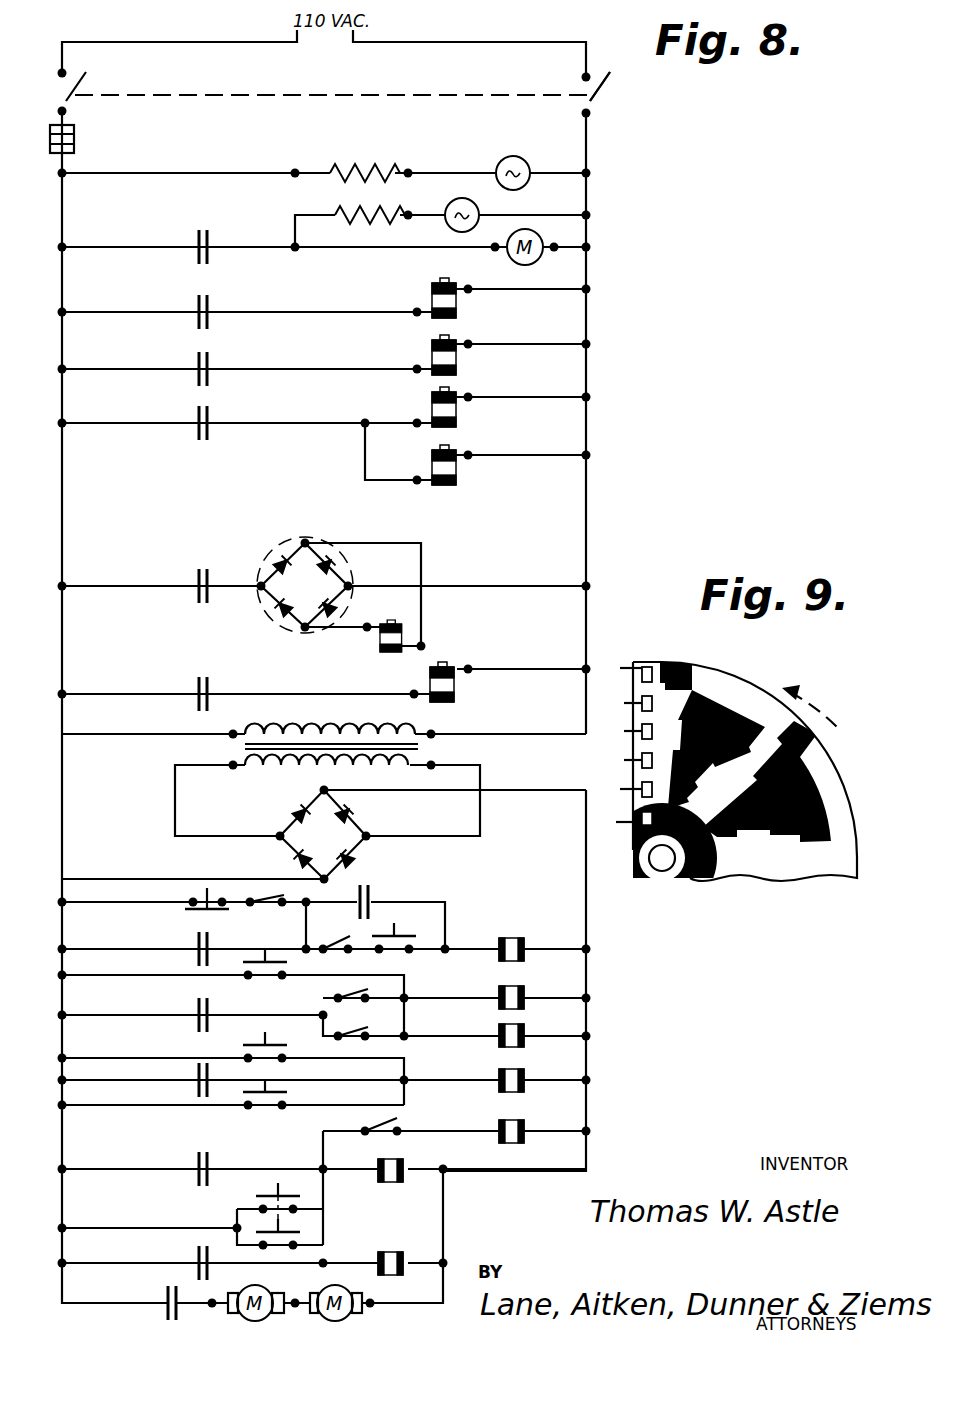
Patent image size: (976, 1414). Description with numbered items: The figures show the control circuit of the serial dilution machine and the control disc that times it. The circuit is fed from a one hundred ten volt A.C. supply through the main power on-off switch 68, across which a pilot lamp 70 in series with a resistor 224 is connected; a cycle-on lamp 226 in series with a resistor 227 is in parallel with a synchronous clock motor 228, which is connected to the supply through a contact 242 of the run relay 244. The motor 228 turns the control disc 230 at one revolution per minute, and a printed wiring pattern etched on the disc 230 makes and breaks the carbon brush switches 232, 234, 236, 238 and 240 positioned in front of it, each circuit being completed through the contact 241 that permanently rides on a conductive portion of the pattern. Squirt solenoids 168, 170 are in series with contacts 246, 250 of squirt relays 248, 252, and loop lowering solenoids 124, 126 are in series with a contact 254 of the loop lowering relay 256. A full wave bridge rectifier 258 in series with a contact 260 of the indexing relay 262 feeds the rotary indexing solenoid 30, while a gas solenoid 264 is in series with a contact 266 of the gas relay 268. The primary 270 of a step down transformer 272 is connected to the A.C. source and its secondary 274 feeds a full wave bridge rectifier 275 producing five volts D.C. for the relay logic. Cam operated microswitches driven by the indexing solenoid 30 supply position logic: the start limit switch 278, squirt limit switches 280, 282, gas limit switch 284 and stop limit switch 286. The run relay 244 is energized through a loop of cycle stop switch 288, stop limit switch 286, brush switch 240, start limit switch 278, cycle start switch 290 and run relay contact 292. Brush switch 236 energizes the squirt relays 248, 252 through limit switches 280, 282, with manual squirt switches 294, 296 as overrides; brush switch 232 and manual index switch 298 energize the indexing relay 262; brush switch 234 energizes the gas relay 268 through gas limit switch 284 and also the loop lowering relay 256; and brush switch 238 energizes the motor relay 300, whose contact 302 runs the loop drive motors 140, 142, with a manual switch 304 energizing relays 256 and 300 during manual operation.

In FIG. 8, the main power on-off switch 68 is at (600, 97).
In FIG. 8, the resistor 224 is at (362, 168).
In FIG. 8, the resistor 227 is at (333, 213).
In FIG. 8, the cycle-on lamp 226 is at (462, 198).
In FIG. 8, the pilot lamp 70 is at (513, 156).
In FIG. 8, the synchronous clock motor 228 is at (545, 240).
In FIG. 8, the contact of run relay 242 is at (192, 245).
In FIG. 8, the contact of squirt relay 248 246 is at (192, 310).
In FIG. 8, the contact of squirt relay 252 250 is at (192, 367).
In FIG. 8, the contact of loop lowering relay 254 is at (192, 421).
In FIG. 8, the squirt solenoid 168 is at (456, 300).
In FIG. 8, the squirt solenoid 170 is at (456, 357).
In FIG. 8, the loop lowering solenoid 124 is at (456, 409).
In FIG. 8, the loop lowering solenoid 126 is at (456, 467).
In FIG. 8, the full wave bridge rectifier 258 is at (282, 560).
In FIG. 8, the contact of indexing relay 260 is at (192, 584).
In FIG. 8, the rotary indexing solenoid 30 is at (378, 644).
In FIG. 8, the contact of gas relay 266 is at (192, 692).
In FIG. 8, the gas solenoid 264 is at (457, 684).
In FIG. 8, the primary 270 is at (302, 722).
In FIG. 8, the step down A.C. transformer 272 is at (242, 746).
In FIG. 8, the secondary 274 is at (305, 770).
In FIG. 8, the full wave bridge rectifier 275 is at (288, 822).
In FIG. 8, the cycle stop switch 288 is at (207, 888).
In FIG. 8, the stop limit switch 286 is at (268, 878).
In FIG. 8, the run relay contact 292 is at (372, 888).
In FIG. 8, the start limit switch 278 is at (332, 940).
In FIG. 8, the cycle start switch 290 is at (412, 934).
In FIG. 8, the run relay 244 is at (510, 940).
In FIG. 8, the manual squirt switch 294 is at (268, 958).
In FIG. 8, the brush switch 240 is at (192, 947).
In FIG. 9, the brush switch 240 is at (636, 786).
In FIG. 8, the squirt relay 248 is at (515, 988).
In FIG. 8, the squirt limit switch 280 is at (340, 990).
In FIG. 8, the squirt relay 252 is at (515, 1028).
In FIG. 8, the squirt limit switch 282 is at (368, 1022).
In FIG. 8, the brush switch 236 is at (192, 1013).
In FIG. 9, the brush switch 236 is at (636, 758).
In FIG. 8, the manual squirt switch 296 is at (255, 1044).
In FIG. 8, the indexing relay 262 is at (515, 1072).
In FIG. 8, the brush switch 232 is at (208, 1088).
In FIG. 9, the brush switch 232 is at (650, 662).
In FIG. 8, the manual index switch 298 is at (272, 1098).
In FIG. 8, the gas limit switch 284 is at (396, 1117).
In FIG. 8, the gas relay 268 is at (515, 1125).
In FIG. 8, the brush switch 234 is at (192, 1167).
In FIG. 9, the brush switch 234 is at (634, 704).
In FIG. 8, the loop lowering relay 256 is at (395, 1168).
In FIG. 8, the manual switch 304 is at (284, 1234).
In FIG. 8, the motor relay 300 is at (392, 1252).
In FIG. 8, the brush switch 238 is at (192, 1261).
In FIG. 9, the brush switch 238 is at (636, 730).
In FIG. 8, the contact of motor relay 302 is at (162, 1301).
In FIG. 8, the loop drive motor 140 is at (262, 1286).
In FIG. 8, the loop drive motor 142 is at (346, 1290).
In FIG. 9, the control disc 230 is at (740, 672).
In FIG. 9, the contact 241 is at (620, 830).